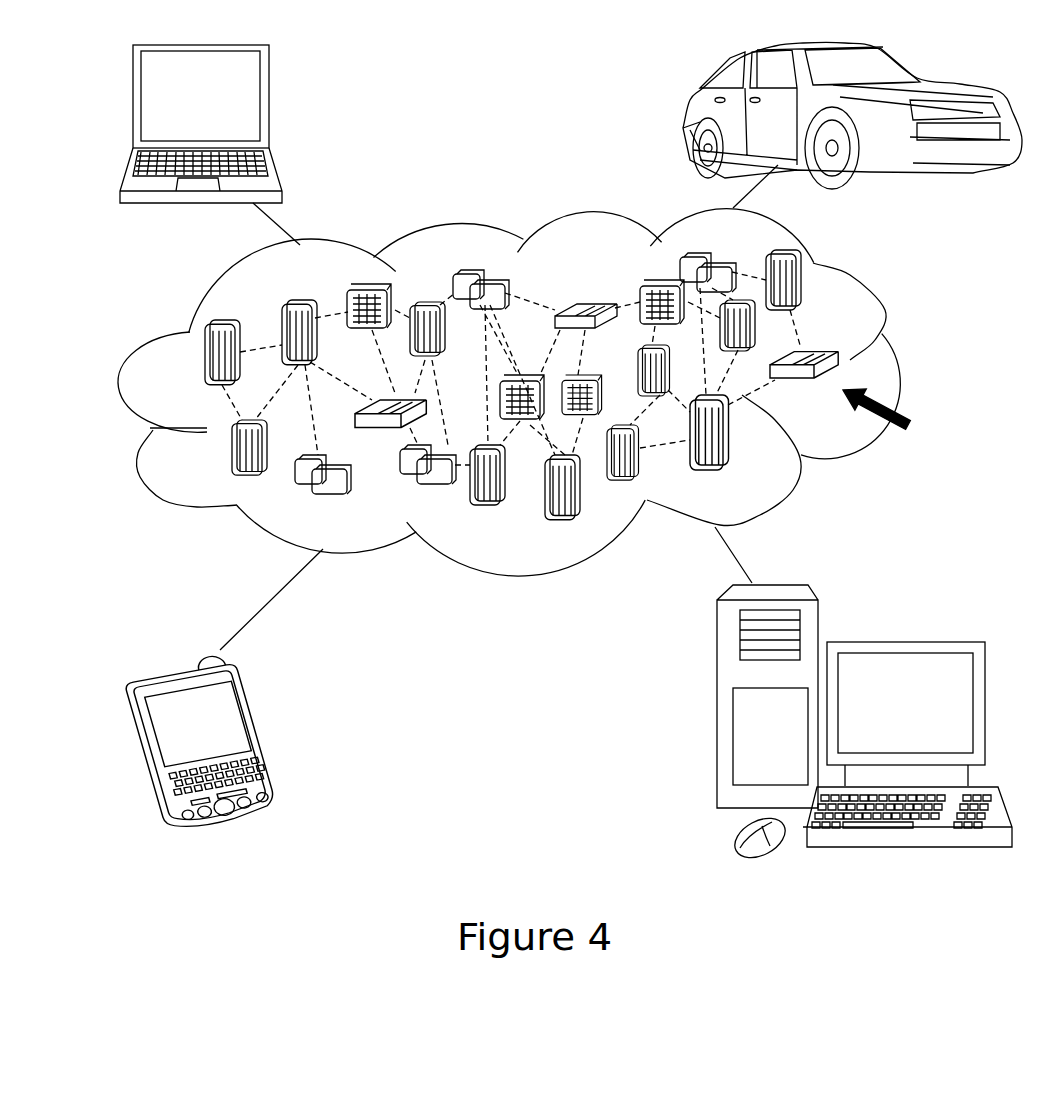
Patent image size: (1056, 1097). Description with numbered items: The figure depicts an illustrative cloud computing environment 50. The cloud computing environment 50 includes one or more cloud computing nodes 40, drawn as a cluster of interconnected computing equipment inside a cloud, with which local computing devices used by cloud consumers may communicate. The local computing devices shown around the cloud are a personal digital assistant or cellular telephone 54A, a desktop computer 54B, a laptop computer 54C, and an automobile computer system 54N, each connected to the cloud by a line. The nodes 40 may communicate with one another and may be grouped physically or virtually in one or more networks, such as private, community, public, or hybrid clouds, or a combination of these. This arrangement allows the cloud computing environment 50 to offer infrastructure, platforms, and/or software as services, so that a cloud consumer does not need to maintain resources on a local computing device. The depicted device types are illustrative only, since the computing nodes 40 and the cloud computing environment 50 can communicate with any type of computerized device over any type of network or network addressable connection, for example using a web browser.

The cloud computing environment 50 is at (905, 363).
The cloud computing nodes 40 is at (894, 413).
The personal digital assistant or cellular telephone 54A is at (264, 733).
The desktop computer 54B is at (902, 642).
The laptop computer 54C is at (270, 100).
The automobile computer system 54N is at (695, 116).